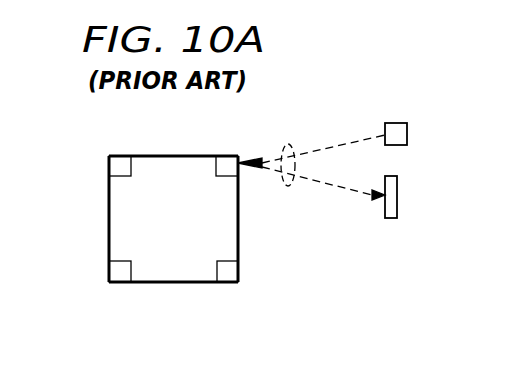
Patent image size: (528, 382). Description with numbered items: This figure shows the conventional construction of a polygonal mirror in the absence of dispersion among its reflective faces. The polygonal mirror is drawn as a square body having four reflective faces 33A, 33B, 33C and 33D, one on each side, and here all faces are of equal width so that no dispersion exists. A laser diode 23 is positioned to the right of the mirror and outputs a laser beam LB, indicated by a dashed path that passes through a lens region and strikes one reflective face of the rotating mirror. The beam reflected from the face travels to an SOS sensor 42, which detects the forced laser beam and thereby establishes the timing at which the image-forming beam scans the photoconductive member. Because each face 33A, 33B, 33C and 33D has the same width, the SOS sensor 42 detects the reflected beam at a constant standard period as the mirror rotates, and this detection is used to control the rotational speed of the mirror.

The laser diode 23 is at (395, 123).
The SOS sensor 42 is at (397, 197).
The laser beam LB is at (290, 142).
The reflective face 33A is at (109, 220).
The reflective face 33B is at (173, 156).
The reflective face 33C is at (238, 218).
The reflective face 33D is at (173, 282).